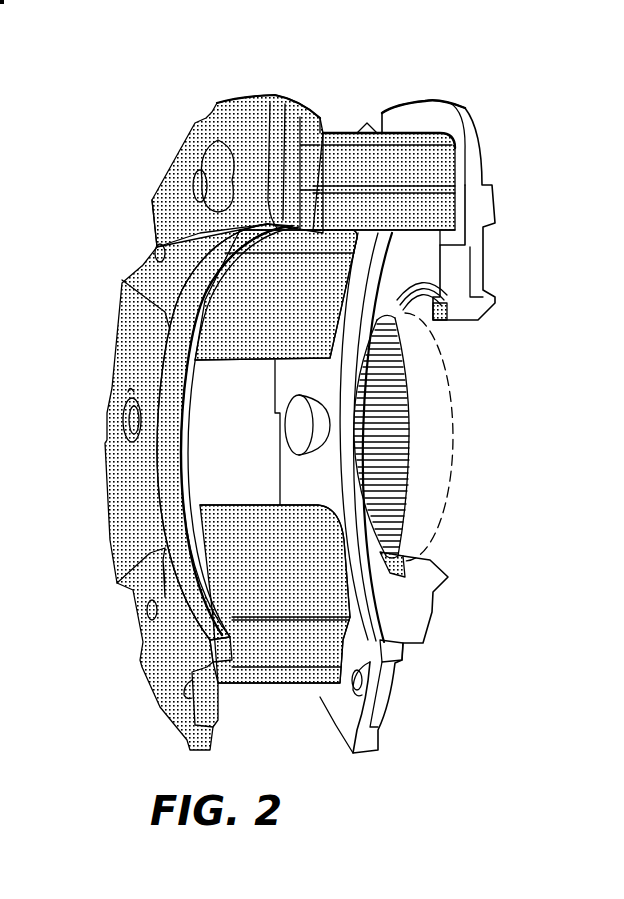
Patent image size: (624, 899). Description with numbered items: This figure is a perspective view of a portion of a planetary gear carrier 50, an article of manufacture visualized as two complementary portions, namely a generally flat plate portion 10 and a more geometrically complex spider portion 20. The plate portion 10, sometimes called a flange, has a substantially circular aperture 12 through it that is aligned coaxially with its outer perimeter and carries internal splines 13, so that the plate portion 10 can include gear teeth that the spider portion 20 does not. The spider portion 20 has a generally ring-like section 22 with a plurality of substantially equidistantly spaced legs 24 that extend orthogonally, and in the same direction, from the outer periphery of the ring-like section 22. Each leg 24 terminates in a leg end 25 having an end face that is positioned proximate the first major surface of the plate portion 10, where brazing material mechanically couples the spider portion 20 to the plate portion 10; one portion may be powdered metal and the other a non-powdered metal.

The plate portion 10 is at (441, 94).
The circular aperture 12 is at (430, 428).
The internal splines 13 is at (378, 440).
The spider portion 20 is at (229, 94).
The ring-like section 22 is at (130, 350).
The legs 24 is at (262, 320).
The leg end 25 is at (320, 548).
The planetary gear carrier 50 is at (131, 178).